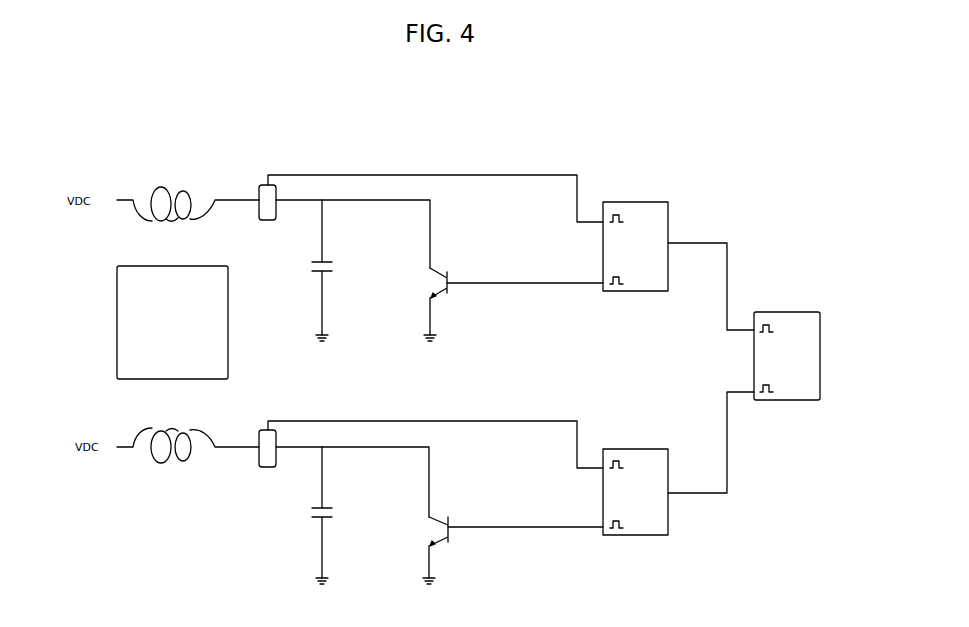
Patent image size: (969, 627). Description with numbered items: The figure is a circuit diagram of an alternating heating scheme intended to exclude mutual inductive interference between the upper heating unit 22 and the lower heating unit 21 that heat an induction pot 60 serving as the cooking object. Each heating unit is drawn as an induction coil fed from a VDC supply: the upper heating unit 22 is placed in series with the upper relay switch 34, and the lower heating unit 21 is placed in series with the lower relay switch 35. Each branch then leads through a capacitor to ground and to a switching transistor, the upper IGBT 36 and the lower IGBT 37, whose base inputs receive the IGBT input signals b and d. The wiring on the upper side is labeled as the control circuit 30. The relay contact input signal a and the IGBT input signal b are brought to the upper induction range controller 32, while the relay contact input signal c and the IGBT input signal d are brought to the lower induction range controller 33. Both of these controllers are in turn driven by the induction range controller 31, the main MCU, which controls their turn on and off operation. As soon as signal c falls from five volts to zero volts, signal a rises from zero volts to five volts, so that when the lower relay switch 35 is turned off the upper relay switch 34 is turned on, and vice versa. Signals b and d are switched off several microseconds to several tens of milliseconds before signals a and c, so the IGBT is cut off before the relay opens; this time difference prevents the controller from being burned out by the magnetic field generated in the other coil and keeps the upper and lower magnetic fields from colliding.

The lower heating unit 21 is at (163, 482).
The upper heating unit 22 is at (157, 176).
The control circuit 30 is at (575, 162).
The induction range controller 31 is at (780, 310).
The upper induction range controller 32 is at (638, 200).
The lower induction range controller 33 is at (628, 448).
The upper relay switch 34 is at (262, 183).
The lower relay switch 35 is at (262, 428).
The first transistor 36 is at (437, 268).
The second transistor 37 is at (447, 515).
The induction pot 60 is at (117, 307).